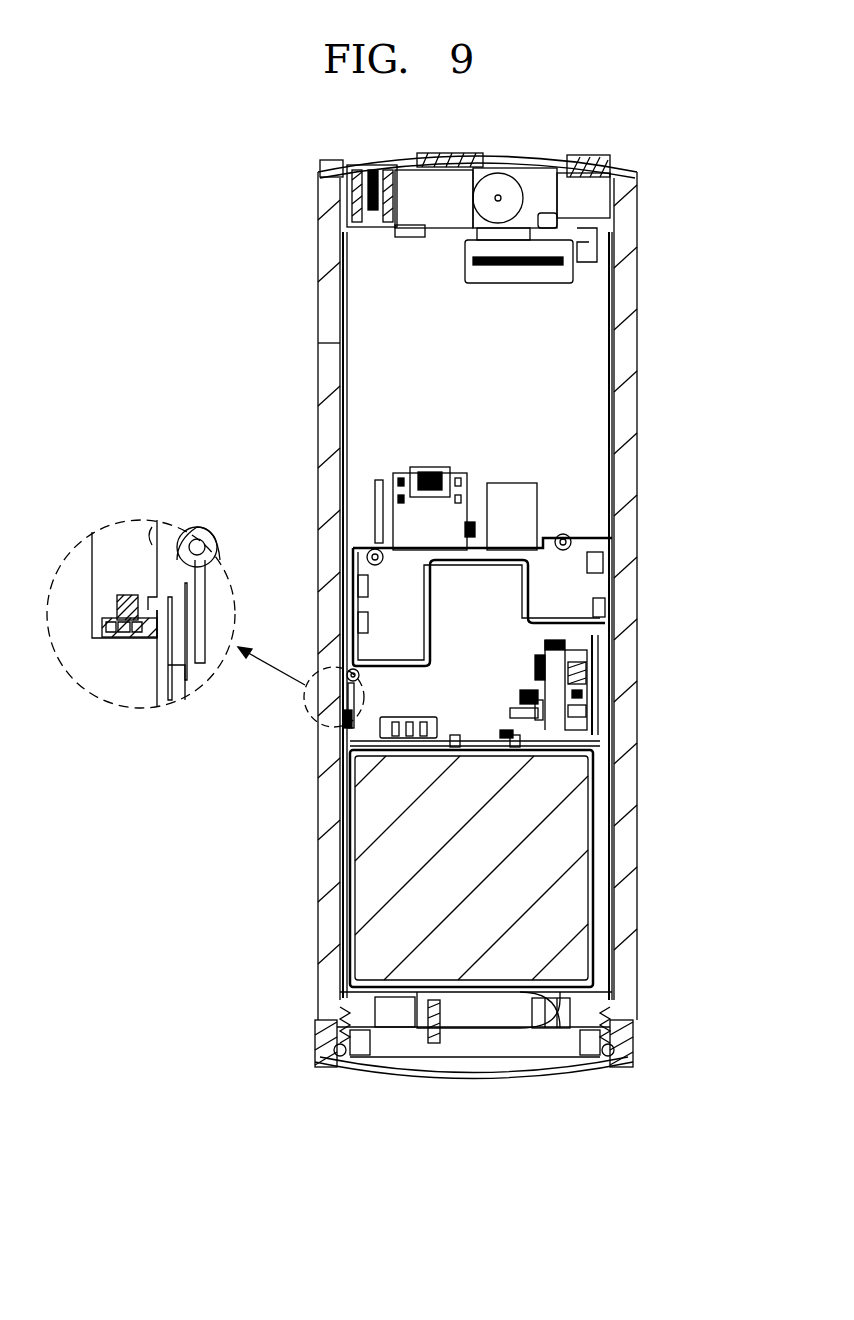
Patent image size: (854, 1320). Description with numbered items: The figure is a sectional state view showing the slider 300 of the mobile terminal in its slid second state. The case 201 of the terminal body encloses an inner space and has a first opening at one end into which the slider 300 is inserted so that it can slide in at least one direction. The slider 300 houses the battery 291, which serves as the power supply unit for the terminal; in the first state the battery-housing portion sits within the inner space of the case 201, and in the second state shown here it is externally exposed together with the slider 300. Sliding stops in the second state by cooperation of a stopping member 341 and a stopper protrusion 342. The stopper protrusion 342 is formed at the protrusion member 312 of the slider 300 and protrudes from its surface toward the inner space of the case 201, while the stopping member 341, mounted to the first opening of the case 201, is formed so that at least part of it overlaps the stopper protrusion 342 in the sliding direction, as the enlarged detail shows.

The case 201 is at (630, 383).
The battery 291 is at (548, 857).
The slider 300 is at (521, 1083).
The protrusion member 312 is at (148, 527).
The stopping member 341 is at (152, 635).
The stopper protrusion 342 is at (148, 593).